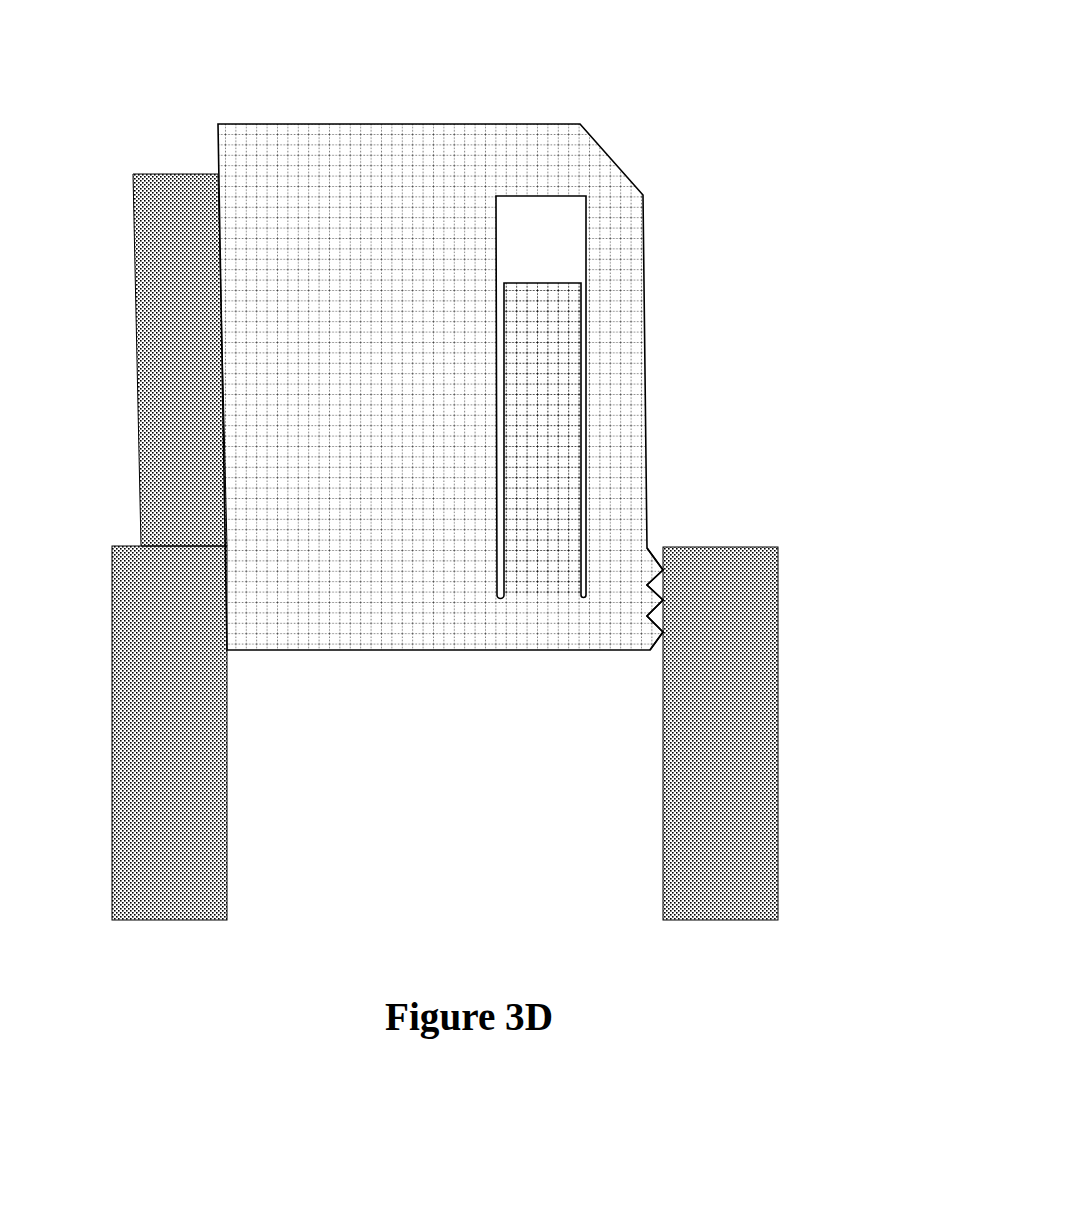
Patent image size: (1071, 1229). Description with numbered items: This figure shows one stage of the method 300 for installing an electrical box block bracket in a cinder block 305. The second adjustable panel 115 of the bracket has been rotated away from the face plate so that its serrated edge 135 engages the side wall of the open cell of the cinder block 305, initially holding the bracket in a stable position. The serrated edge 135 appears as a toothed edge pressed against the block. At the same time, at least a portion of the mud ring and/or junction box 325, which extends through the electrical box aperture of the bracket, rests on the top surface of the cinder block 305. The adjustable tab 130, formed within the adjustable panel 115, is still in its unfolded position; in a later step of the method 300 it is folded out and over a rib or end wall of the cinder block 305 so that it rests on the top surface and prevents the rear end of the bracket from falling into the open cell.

The method 300 is at (402, 472).
The second adjustable panel 115 is at (413, 395).
The adjustable tab 130 is at (553, 370).
The serrated edge 135 is at (650, 553).
The cinder block 305 is at (155, 748).
The mud ring and/or junction box 325 is at (167, 376).